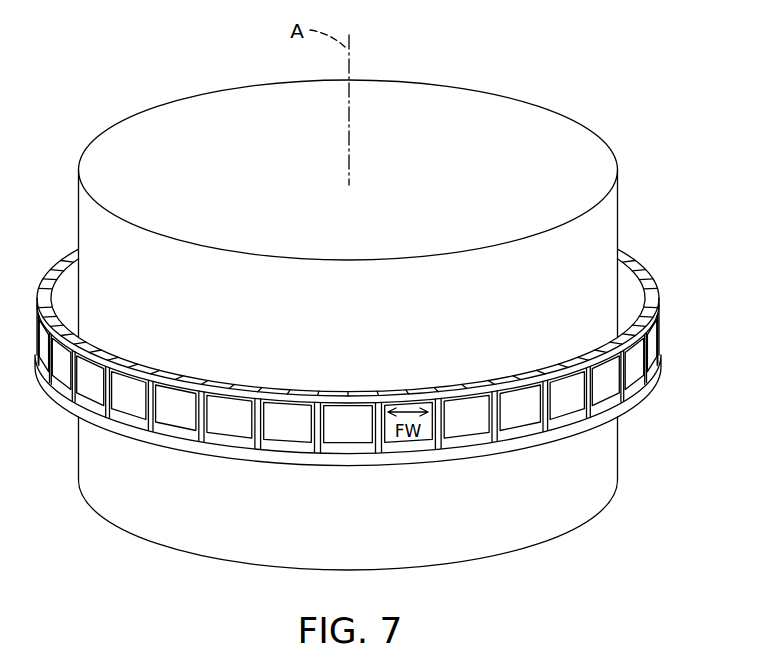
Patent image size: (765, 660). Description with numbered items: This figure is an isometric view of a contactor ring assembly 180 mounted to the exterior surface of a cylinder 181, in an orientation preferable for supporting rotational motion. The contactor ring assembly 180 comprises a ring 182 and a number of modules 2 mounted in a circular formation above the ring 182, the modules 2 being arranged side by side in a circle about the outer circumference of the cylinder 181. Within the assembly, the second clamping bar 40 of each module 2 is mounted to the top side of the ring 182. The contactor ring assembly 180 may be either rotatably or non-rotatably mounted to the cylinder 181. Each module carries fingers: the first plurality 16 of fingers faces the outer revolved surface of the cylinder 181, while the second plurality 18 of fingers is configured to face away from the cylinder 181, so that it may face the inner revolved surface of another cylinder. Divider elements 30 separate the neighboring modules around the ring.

The module 2 is at (185, 397).
The first plurality of fingers 16 is at (620, 262).
The second plurality of fingers 18 is at (645, 272).
The divider 30 is at (650, 294).
The second clamping bar 40 is at (230, 445).
The contactor ring assembly 180 is at (633, 400).
The cylinder 181 is at (598, 178).
The ring 182 is at (563, 440).